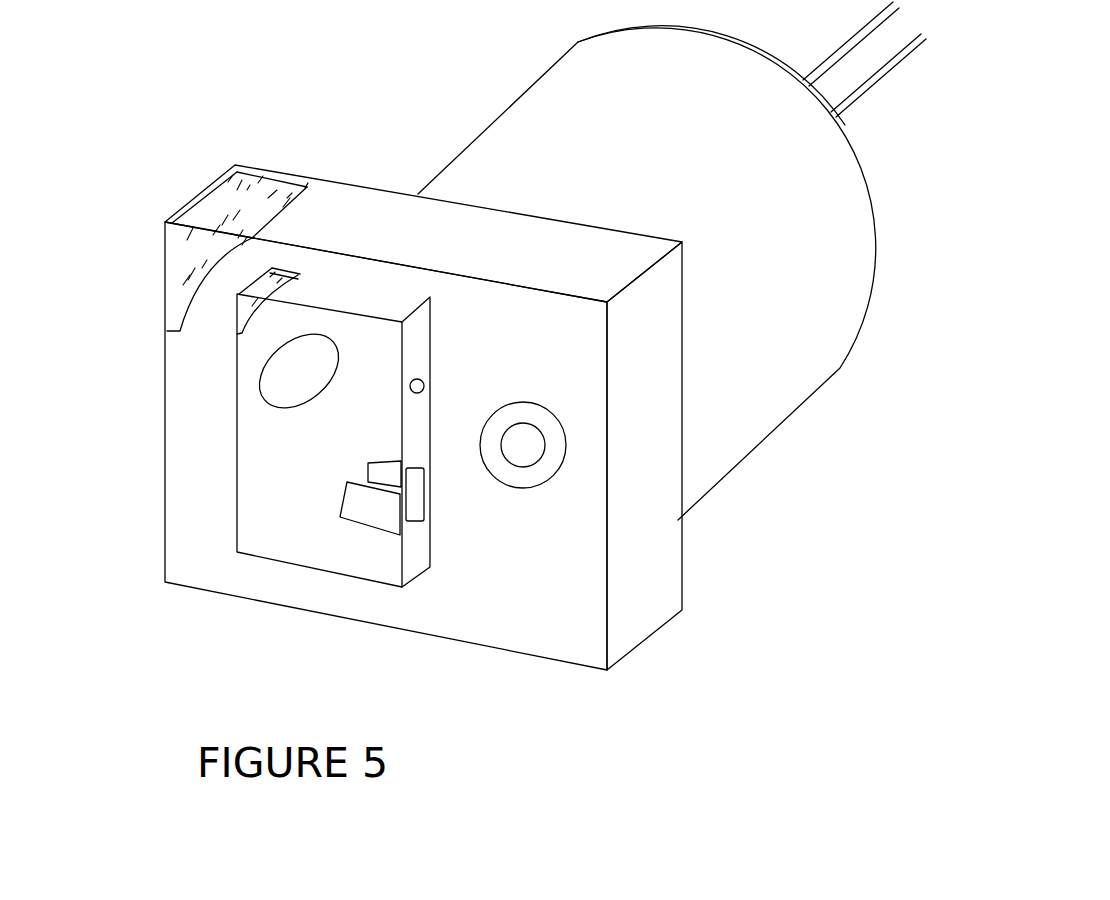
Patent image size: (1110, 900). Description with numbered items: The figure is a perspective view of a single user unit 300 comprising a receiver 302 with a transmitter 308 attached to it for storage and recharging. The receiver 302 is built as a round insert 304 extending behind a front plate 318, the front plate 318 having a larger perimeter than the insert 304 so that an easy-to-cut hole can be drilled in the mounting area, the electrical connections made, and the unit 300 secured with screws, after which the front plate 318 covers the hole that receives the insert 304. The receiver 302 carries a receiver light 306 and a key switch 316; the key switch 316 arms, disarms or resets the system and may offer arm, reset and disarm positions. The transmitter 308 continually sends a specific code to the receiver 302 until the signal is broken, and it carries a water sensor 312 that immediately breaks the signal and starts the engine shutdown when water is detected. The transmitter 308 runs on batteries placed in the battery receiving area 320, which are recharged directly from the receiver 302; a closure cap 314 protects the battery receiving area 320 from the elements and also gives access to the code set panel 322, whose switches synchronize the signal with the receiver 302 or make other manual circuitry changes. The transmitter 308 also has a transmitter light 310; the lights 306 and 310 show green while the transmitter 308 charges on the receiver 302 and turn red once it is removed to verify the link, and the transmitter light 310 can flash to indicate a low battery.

The single user unit 300 is at (357, 449).
The receiver 302 is at (678, 547).
The round insert 304 is at (502, 143).
The receiver light 306 is at (207, 203).
The transmitter 308 is at (346, 482).
The transmitter light 310 is at (252, 305).
The water sensor 312 is at (424, 381).
The closure cap 314 is at (413, 493).
The key switch 316 is at (558, 455).
The front plate 318 is at (543, 630).
The battery receiving area 320 is at (383, 513).
The code set panel 322 is at (381, 468).